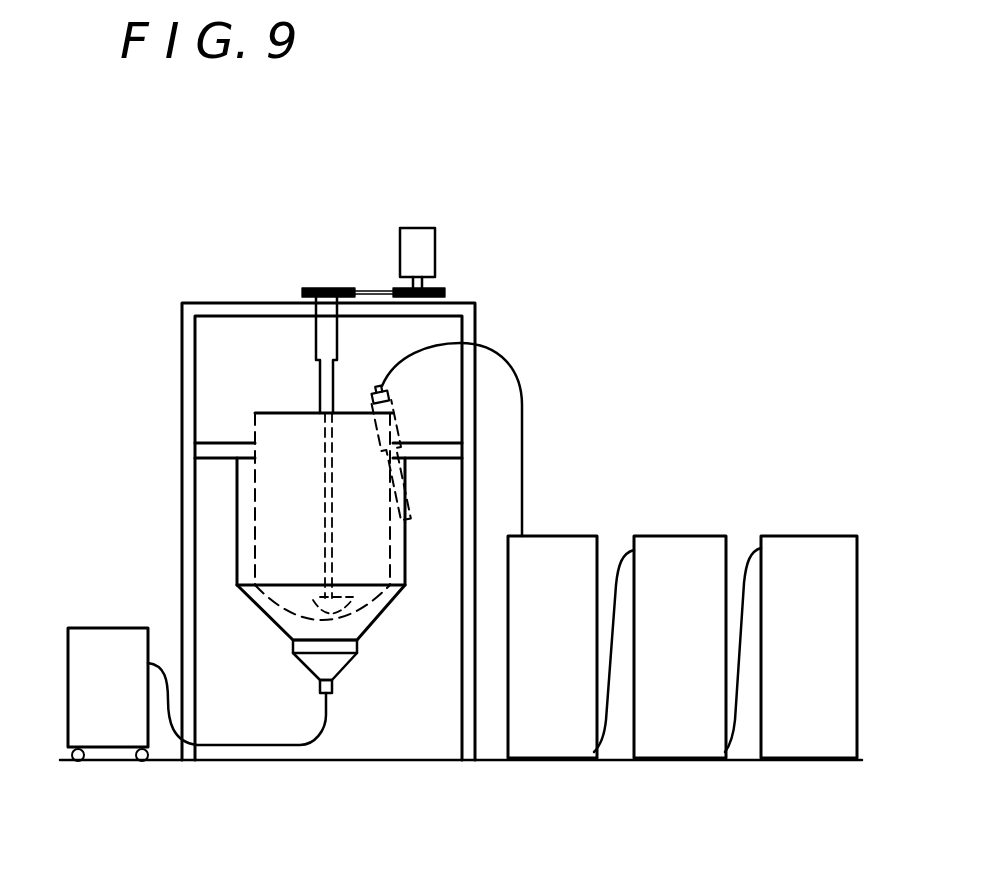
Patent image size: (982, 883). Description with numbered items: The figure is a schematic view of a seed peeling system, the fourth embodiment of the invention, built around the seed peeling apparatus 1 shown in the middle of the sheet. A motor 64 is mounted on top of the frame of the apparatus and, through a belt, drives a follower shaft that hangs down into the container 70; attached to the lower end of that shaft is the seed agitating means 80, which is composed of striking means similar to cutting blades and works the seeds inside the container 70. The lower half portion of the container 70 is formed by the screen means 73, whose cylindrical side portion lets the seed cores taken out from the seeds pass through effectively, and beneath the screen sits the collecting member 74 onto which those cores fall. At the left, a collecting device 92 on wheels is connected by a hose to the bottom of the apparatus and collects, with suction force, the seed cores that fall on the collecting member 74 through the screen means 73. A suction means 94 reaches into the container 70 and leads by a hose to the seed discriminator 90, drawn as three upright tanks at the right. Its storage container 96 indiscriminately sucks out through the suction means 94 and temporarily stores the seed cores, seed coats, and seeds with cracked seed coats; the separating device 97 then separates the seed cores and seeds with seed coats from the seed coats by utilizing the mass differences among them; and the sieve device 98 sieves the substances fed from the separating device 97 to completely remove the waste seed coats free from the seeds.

The mixing apparatus frame 1 is at (242, 413).
The motor 64 is at (413, 250).
The container 70 is at (255, 498).
The screen means 73 is at (365, 618).
The collecting member 74 is at (390, 604).
The seed agitating means 80 is at (318, 600).
The seed discriminator 90 is at (767, 424).
The collecting device 92 is at (107, 728).
The suction means 94 is at (392, 403).
The storage container 96 is at (558, 552).
The separating device 97 is at (685, 557).
The sieve device 98 is at (800, 553).